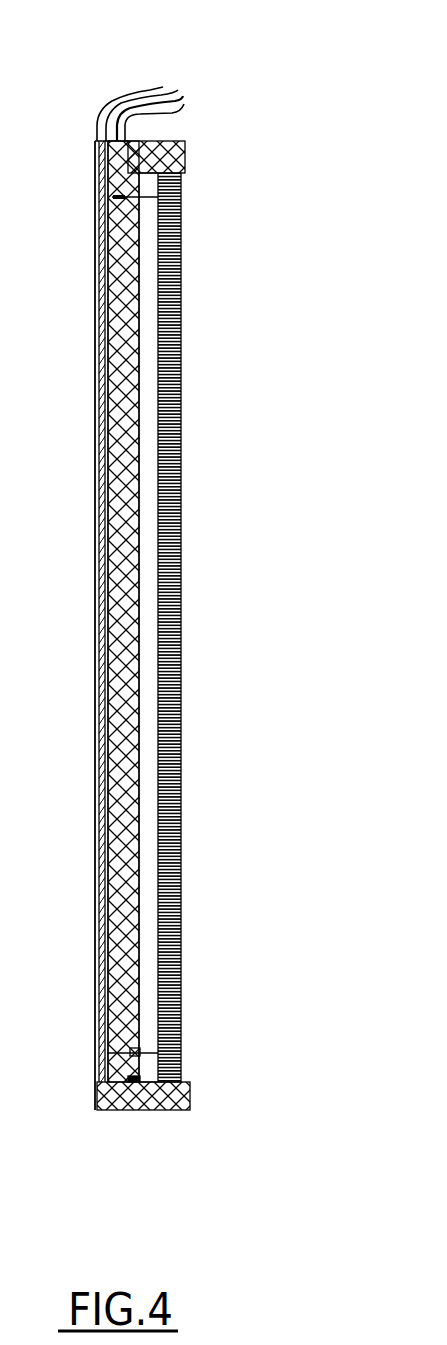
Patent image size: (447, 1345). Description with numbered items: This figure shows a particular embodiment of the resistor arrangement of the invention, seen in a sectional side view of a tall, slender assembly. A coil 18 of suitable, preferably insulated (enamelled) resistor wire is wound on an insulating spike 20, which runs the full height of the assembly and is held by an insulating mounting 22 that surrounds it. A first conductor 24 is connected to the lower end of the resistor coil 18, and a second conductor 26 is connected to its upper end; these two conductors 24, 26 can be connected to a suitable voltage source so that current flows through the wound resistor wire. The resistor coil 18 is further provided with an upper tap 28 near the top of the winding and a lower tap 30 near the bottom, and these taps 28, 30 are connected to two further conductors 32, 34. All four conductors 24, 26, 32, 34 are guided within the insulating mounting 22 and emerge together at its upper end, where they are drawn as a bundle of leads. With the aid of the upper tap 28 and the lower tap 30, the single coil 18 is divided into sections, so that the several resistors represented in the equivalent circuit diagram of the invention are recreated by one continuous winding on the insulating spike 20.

The coil 18 is at (181, 423).
The insulating spike 20 is at (167, 1085).
The insulating mounting 22 is at (187, 146).
The first conductor 24 is at (131, 92).
The second conductor 26 is at (180, 110).
The upper tap 28 is at (147, 203).
The lower tap 30 is at (152, 1053).
The conductor 32 is at (183, 96).
The conductor 34 is at (178, 90).